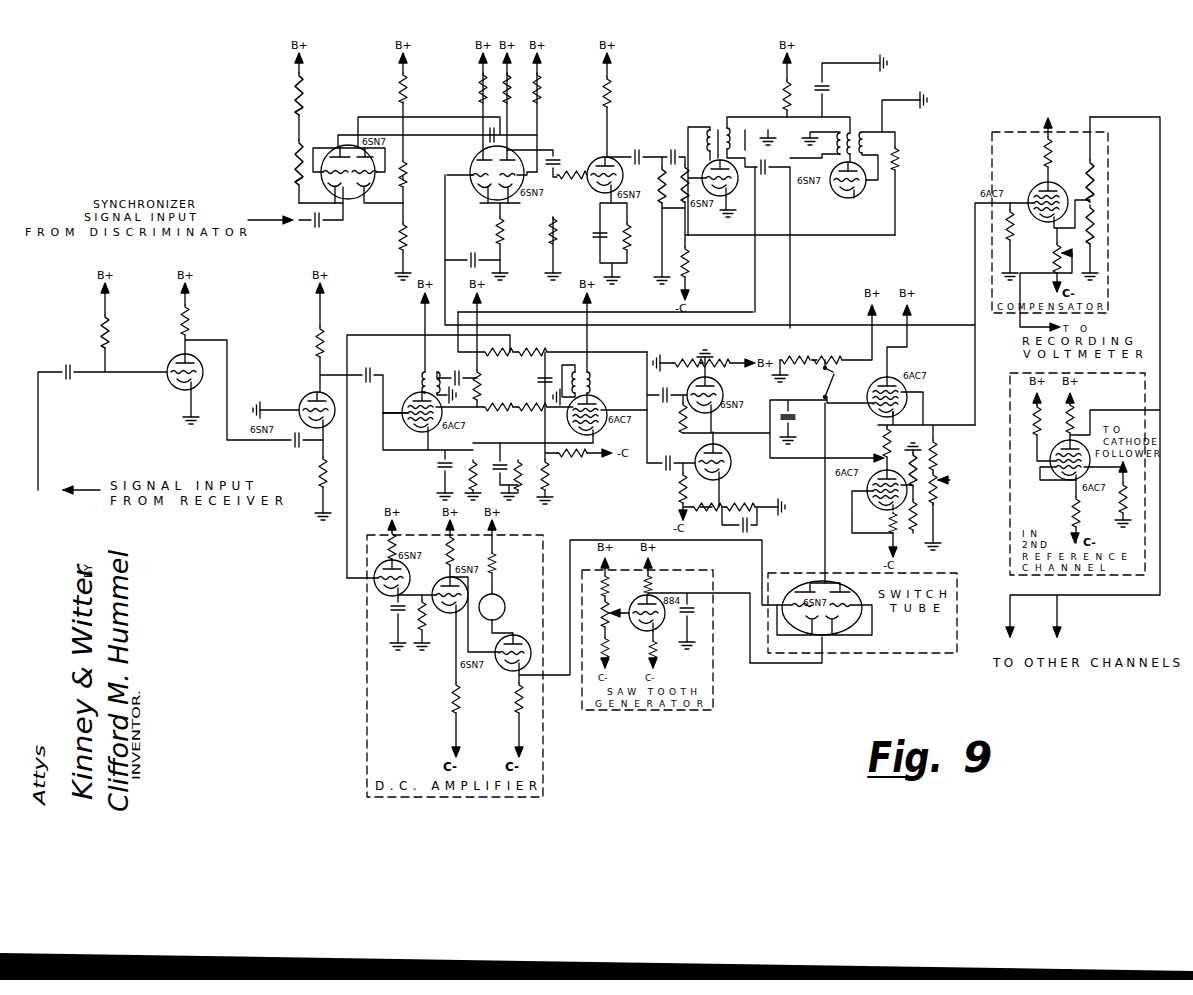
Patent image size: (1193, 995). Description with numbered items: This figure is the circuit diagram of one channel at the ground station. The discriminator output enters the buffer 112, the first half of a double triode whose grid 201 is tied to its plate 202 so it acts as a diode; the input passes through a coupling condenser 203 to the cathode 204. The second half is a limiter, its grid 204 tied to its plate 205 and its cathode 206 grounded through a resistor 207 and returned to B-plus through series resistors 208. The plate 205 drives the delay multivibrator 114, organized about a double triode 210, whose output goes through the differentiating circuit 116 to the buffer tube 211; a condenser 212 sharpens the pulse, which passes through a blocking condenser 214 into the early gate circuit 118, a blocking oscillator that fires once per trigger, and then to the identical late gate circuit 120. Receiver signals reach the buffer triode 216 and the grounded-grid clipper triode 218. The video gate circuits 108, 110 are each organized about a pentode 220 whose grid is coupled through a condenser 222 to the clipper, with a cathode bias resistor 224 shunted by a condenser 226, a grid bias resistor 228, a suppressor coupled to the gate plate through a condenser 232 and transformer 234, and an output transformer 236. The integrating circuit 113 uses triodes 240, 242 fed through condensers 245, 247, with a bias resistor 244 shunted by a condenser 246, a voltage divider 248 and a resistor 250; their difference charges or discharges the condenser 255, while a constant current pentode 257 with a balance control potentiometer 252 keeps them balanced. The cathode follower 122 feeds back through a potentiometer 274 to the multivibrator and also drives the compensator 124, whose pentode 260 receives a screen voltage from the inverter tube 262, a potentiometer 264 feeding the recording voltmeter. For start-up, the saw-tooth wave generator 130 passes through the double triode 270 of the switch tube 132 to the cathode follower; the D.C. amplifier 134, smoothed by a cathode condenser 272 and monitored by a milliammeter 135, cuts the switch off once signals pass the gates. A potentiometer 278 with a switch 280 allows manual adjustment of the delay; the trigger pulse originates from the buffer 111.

The grid 201 is at (297, 190).
The plate 202 is at (341, 152).
The coupling condenser 203 is at (329, 230).
The cathode 204 is at (378, 170).
The plate 205 is at (385, 150).
The cathode 206 is at (391, 174).
The resistor 207 is at (418, 236).
The resistor 208 is at (406, 175).
The double triode 210 is at (476, 182).
The buffer tube 211 is at (590, 168).
The condenser 212 is at (633, 152).
The blocking condenser 214 is at (671, 152).
The buffer triode 216 is at (171, 365).
The clipper triode 218 is at (312, 399).
The pentode 220 is at (406, 420).
The condenser 222 is at (372, 373).
The bias resistor 224 is at (532, 478).
The condenser 226 is at (511, 475).
The bias resistor 228 is at (462, 475).
The condenser 232 is at (470, 376).
The transformer 234 is at (735, 133).
The transformer 236 is at (434, 371).
The triode 240 is at (707, 501).
The triode 242 is at (693, 418).
The bias resistor 244 is at (740, 498).
The condenser 245 is at (664, 467).
The condenser 246 is at (750, 528).
The condenser 247 is at (670, 380).
The voltage divider 248 is at (702, 515).
The resistor 250 is at (680, 488).
The balance control potentiometer 252 is at (880, 460).
The condenser 255 is at (796, 410).
The constant current pentode 257 is at (882, 510).
The pentode 260 is at (1041, 190).
The inverter tube 262 is at (1063, 441).
The potentiometer 264 is at (1055, 250).
The double triode 270 is at (845, 600).
The cathode condenser 272 is at (387, 611).
The potentiometer 274 is at (945, 484).
The potentiometer 278 is at (830, 375).
The switch 280 is at (832, 390).
The video gate circuit 108 is at (417, 422).
The video gate circuit 110 is at (579, 420).
The buffer 111 is at (372, 171).
The buffer 112 is at (726, 462).
The integrating circuit 113 is at (717, 395).
The delay multivibrator 114 is at (480, 197).
The differentiating circuit 116 is at (591, 188).
The early gate circuit 118 is at (714, 196).
The late gate circuit 120 is at (846, 198).
The cathode follower 122 is at (891, 401).
The compensator 124 is at (1024, 227).
The saw-tooth wave generator 130 is at (711, 620).
The switch tube 132 is at (853, 616).
The D.C. amplifier 134 is at (557, 641).
The milliammeter 135 is at (504, 601).